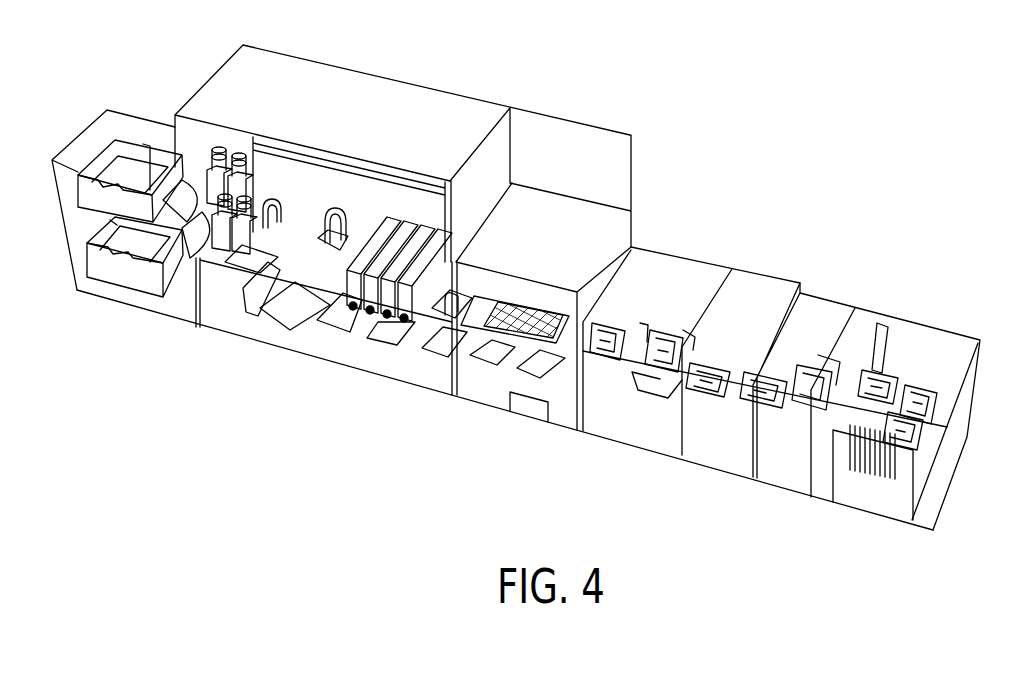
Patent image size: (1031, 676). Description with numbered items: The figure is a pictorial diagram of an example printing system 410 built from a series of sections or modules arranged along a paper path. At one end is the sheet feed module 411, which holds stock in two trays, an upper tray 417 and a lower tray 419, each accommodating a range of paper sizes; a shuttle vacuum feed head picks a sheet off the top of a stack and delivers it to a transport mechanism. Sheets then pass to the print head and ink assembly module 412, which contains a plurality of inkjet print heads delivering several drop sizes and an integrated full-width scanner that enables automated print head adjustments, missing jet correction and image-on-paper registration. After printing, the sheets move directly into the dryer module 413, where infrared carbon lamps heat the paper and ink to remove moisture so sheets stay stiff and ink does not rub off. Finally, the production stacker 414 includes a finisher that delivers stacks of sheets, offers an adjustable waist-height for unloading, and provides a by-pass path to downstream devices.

The printing system 410 is at (728, 211).
The sheet feed module 411 is at (152, 89).
The print head and ink assembly module 412 is at (405, 222).
The dryer module 413 is at (528, 285).
The production stacker 414 is at (940, 357).
The upper container tray 417 is at (107, 163).
The lower container tray 419 is at (127, 270).